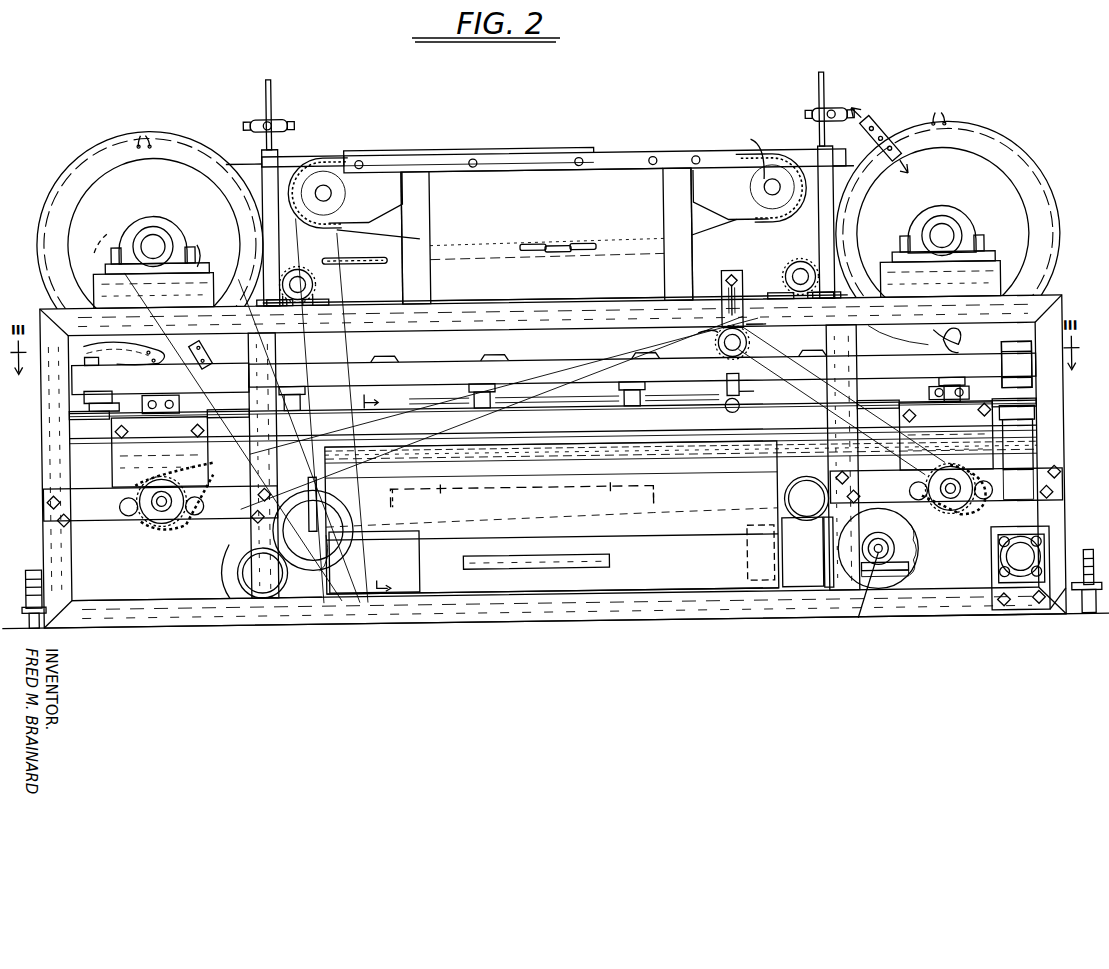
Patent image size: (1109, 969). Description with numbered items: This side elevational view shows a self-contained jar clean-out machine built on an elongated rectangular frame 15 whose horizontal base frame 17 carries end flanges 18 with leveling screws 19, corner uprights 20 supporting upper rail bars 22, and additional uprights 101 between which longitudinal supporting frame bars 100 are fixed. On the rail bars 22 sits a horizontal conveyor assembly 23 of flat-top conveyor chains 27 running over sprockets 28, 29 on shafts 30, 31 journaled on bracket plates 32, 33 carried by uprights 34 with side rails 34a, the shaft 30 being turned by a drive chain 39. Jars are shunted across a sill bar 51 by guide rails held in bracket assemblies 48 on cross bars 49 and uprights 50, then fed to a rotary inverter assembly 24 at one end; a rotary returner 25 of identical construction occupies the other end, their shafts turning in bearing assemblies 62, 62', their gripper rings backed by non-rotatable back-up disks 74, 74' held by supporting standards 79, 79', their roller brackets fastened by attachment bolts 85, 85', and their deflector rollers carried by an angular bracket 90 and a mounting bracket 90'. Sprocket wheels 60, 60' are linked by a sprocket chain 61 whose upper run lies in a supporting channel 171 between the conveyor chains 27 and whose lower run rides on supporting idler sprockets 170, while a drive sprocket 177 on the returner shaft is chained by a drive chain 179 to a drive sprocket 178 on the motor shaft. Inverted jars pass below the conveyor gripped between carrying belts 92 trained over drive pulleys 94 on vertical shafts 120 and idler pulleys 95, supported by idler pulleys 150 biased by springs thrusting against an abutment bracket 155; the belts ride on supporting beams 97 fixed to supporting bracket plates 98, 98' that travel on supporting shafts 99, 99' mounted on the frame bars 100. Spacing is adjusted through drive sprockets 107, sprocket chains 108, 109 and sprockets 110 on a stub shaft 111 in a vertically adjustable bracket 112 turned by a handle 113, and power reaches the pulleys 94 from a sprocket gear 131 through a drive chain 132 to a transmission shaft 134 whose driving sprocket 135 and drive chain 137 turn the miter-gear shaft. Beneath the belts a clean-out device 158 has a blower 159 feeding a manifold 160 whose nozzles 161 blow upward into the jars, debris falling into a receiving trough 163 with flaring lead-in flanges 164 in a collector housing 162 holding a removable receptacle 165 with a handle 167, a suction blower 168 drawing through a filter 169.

The frame 15 is at (180, 621).
The base frame 17 is at (108, 610).
The horizontal flanges 18 is at (1045, 612).
The leveling screws 19 is at (1087, 556).
The uprights 20 is at (68, 372).
The rail bars 22 is at (572, 298).
The conveyor assembly 23 is at (427, 145).
The rotary inverter assembly 24 is at (1025, 140).
The rotary returner 25 is at (63, 159).
The conveyor chains 27 is at (555, 244).
The sprockets 28 is at (318, 152).
The sprockets 29 is at (810, 156).
The shaft 30 is at (360, 152).
The shaft 31 is at (752, 150).
The bracket plate 32 is at (364, 200).
The bracket plate 33 is at (729, 203).
The uprights 34 is at (430, 294).
The side rails 34a is at (610, 153).
The drive chain 39 is at (362, 296).
The bracket assemblies 48 is at (277, 120).
The cross bars 49 is at (262, 174).
The uprights 50 is at (272, 226).
The sill bar 51 is at (506, 148).
The sprocket wheel 60 is at (943, 233).
The sprocket wheel 60' is at (154, 244).
The sprocket chain 61 is at (760, 242).
The bearing assemblies 62 is at (940, 239).
The bearing assemblies 62' is at (153, 245).
The back-up disk 74 is at (961, 233).
The back-up disk 74' is at (149, 228).
The supporting standard 79 is at (918, 362).
The supporting standard 79' is at (132, 391).
The attachment bolts 85 is at (981, 236).
The attachment bolts 85' is at (140, 118).
The angular bracket 90 is at (885, 144).
The mounting bracket 90' is at (160, 378).
The carrying belts 92 is at (535, 366).
The drive pulleys 94 is at (1033, 386).
The idler pulleys 95 is at (117, 353).
The supporting beams 97 is at (540, 426).
The supporting bracket plates 98 is at (947, 434).
The supporting bracket plates 98' is at (159, 448).
The supporting shafts 99 is at (951, 482).
The supporting shafts 99' is at (161, 514).
The supporting frame bars 100 is at (86, 514).
The additional uprights 101 is at (270, 347).
The drive sprocket 107 is at (158, 478).
The sprocket chain 108 is at (815, 372).
The sprocket chain 109 is at (585, 352).
The sprockets 110 is at (750, 348).
The stub shaft 111 is at (749, 319).
The vertically adjustable bracket 112 is at (722, 310).
The handle 113 is at (740, 408).
The vertical shaft 120 is at (1040, 450).
The sprocket gear 131 is at (338, 600).
The drive chain 132 is at (635, 598).
The transmission shaft 134 is at (874, 594).
The driving sprocket 135 is at (915, 550).
The drive chain 137 is at (965, 600).
The idler pulleys 150 is at (552, 368).
The abutment bracket 155 is at (622, 394).
The clean-out device 158 is at (314, 600).
The blower 159 is at (226, 572).
The manifold 160 is at (565, 482).
The nozzles 161 is at (478, 484).
The collector housing 162 is at (318, 568).
The receiving trough 163 is at (513, 540).
The lead-in flanges 164 is at (770, 456).
The removable receptacle 165 is at (392, 598).
The handle 167 is at (600, 556).
The suction blower 168 is at (790, 580).
The filter 169 is at (738, 598).
The supporting idler sprockets 170 is at (305, 266).
The supporting channel 171 is at (288, 152).
The drive sprocket 177 is at (120, 223).
The drive sprocket 178 is at (274, 538).
The drive chain 179 is at (218, 250).